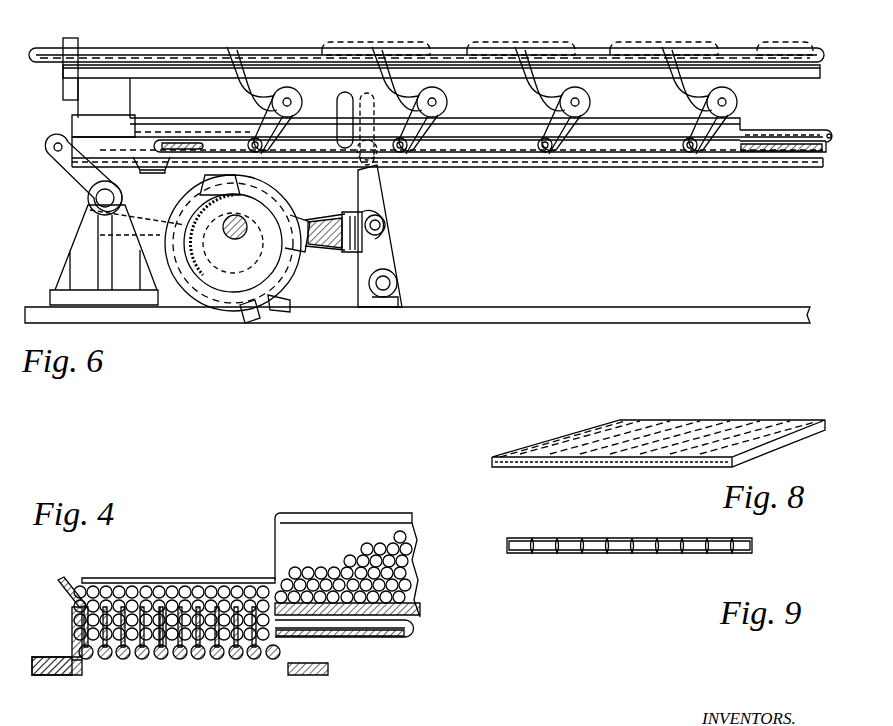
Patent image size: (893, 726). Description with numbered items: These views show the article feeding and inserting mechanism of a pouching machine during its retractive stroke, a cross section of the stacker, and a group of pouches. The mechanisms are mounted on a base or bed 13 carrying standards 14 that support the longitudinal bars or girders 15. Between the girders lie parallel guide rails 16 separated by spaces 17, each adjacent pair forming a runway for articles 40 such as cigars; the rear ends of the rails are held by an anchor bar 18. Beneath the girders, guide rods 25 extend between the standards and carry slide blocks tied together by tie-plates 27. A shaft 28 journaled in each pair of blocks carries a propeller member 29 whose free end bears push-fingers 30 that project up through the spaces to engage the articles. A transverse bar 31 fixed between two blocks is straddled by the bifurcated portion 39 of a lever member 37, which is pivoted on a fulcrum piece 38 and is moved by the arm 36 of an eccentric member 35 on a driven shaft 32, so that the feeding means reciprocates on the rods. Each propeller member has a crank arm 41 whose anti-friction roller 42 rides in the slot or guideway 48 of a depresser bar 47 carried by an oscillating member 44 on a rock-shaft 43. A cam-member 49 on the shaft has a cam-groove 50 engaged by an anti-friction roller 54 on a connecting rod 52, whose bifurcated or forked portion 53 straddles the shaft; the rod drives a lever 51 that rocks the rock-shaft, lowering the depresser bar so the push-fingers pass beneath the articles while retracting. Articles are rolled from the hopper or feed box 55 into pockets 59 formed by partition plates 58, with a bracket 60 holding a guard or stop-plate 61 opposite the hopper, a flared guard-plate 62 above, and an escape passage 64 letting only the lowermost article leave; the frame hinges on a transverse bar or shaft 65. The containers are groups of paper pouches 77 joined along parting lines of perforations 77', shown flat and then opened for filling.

In FIG. 6, the base or bed 13 is at (558, 307).
In FIG. 6, the standards 14 is at (90, 105).
In FIG. 6, the longitudinal bars or girders 15 is at (186, 72).
In FIG. 4, the longitudinal bars or girders 15 is at (312, 676).
In FIG. 6, the guide rails 16 is at (168, 49).
In FIG. 4, the guide rails 16 is at (272, 662).
In FIG. 4, the spaces 17 is at (218, 662).
In FIG. 6, the anchor bar 18 is at (72, 38).
In FIG. 6, the guide rods 25 is at (820, 130).
In FIG. 6, the tie-plates 27 is at (208, 118).
In FIG. 6, the shaft 28 is at (738, 102).
In FIG. 6, the propeller member 29 is at (680, 100).
In FIG. 6, the push-fingers 30 is at (666, 56).
In FIG. 6, the transverse bar 31 is at (375, 160).
In FIG. 6, the shaft 32 is at (228, 280).
In FIG. 6, the eccentric member 35 is at (296, 272).
In FIG. 6, the arm 36 is at (335, 208).
In FIG. 6, the lever member 37 is at (385, 204).
In FIG. 6, the fulcrum piece 38 is at (397, 282).
In FIG. 6, the bifurcated portion 39 is at (348, 100).
In FIG. 6, the articles 40 is at (788, 44).
In FIG. 4, the articles 40 is at (328, 560).
In FIG. 6, the crank arms 41 is at (697, 152).
In FIG. 6, the anti-friction rollers 42 is at (680, 152).
In FIG. 6, the rock-shaft 43 is at (92, 204).
In FIG. 6, the oscillating member 44 is at (70, 172).
In FIG. 6, the depresser bar 47 is at (496, 168).
In FIG. 6, the slot or guideway 48 is at (620, 160).
In FIG. 6, the cam-member 49 is at (185, 196).
In FIG. 6, the cam-groove 50 is at (280, 305).
In FIG. 6, the lever 51 is at (85, 230).
In FIG. 6, the connecting rod 52 is at (150, 246).
In FIG. 6, the bifurcated or forked portion 53 is at (246, 230).
In FIG. 6, the anti-friction roller 54 is at (185, 295).
In FIG. 4, the hopper or feed box 55 is at (374, 520).
In FIG. 4, the partition plates 58 is at (165, 605).
In FIG. 4, the compartment or pocket 59 is at (240, 592).
In FIG. 4, the bracket 60 is at (70, 630).
In FIG. 4, the guard or stop-plate 61 is at (58, 582).
In FIG. 4, the guard-plate 62 is at (186, 580).
In FIG. 4, the escape passage 64 is at (246, 662).
In FIG. 4, the transverse bar or shaft 65 is at (376, 637).
In FIG. 8, the paper pouches 77 is at (658, 464).
In FIG. 9, the paper pouches 77 is at (629, 531).
In FIG. 8, the parting line of perforations 77' is at (575, 412).